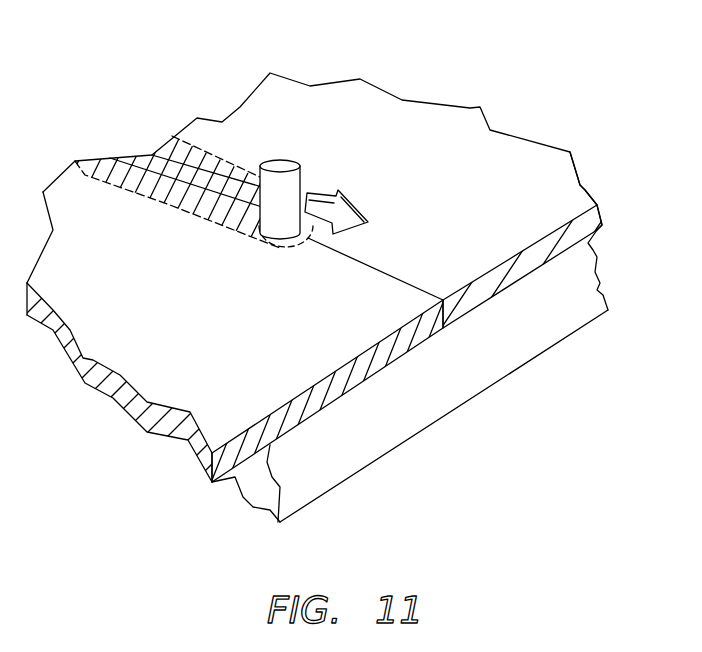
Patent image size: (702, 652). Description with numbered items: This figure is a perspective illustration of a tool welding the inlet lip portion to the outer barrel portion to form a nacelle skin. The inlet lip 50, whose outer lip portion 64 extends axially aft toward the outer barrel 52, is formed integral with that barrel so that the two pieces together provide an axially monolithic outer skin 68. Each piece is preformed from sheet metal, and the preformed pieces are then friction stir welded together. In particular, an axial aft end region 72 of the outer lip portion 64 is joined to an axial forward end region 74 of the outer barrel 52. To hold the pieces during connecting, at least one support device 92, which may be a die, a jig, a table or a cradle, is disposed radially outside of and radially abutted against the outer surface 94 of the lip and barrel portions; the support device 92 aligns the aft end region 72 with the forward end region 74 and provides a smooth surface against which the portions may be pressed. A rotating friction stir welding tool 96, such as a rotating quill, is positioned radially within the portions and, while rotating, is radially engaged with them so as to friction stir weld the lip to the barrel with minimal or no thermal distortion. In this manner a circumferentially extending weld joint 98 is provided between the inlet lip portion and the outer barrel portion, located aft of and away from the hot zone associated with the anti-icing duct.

The inlet lip 50 is at (338, 326).
The outer lip portion 64 is at (164, 443).
The outer barrel 52 is at (586, 178).
The outer skin 68 is at (412, 113).
The aft end region 72 is at (342, 326).
The forward end region 74 is at (447, 266).
The support device 92 is at (460, 397).
The outer surface 94 is at (550, 266).
The friction stir welding tool 96 is at (270, 160).
The weld joint 98 is at (138, 165).